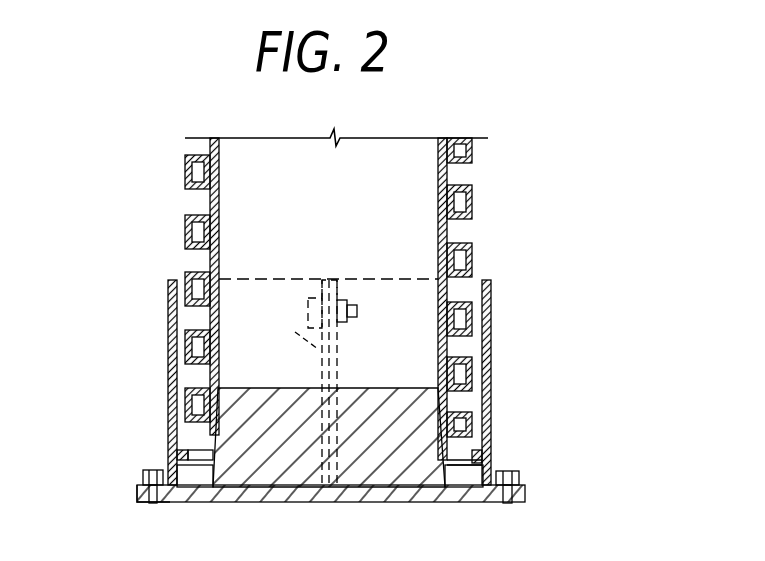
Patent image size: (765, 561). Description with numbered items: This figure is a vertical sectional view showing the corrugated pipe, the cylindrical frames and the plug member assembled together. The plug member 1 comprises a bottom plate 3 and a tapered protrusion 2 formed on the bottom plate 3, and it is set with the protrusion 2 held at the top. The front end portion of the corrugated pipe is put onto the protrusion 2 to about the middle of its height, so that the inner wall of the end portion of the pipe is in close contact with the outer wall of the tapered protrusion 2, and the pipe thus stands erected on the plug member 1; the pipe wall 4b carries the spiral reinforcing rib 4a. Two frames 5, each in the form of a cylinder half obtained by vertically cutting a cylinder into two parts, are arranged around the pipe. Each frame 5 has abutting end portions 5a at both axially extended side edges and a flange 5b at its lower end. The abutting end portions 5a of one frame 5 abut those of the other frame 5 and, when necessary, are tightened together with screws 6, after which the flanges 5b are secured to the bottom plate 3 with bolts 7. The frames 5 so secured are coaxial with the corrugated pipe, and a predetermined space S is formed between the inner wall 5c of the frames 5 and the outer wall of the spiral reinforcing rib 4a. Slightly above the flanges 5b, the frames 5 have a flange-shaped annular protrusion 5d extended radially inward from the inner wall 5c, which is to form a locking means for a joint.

The plug member 1 is at (269, 506).
The protrusion 2 is at (410, 410).
The bottom plate 3 is at (172, 492).
The spiral reinforcing rib 4a is at (472, 262).
The inner wall 4b is at (437, 197).
The frame 5 is at (492, 334).
The abutting end portion 5a is at (295, 332).
The flange 5b is at (143, 476).
The inner wall 5c is at (180, 376).
The annular protrusion 5d is at (475, 443).
The screw 6 is at (312, 297).
The bolt 7 is at (512, 473).
The space S is at (193, 318).